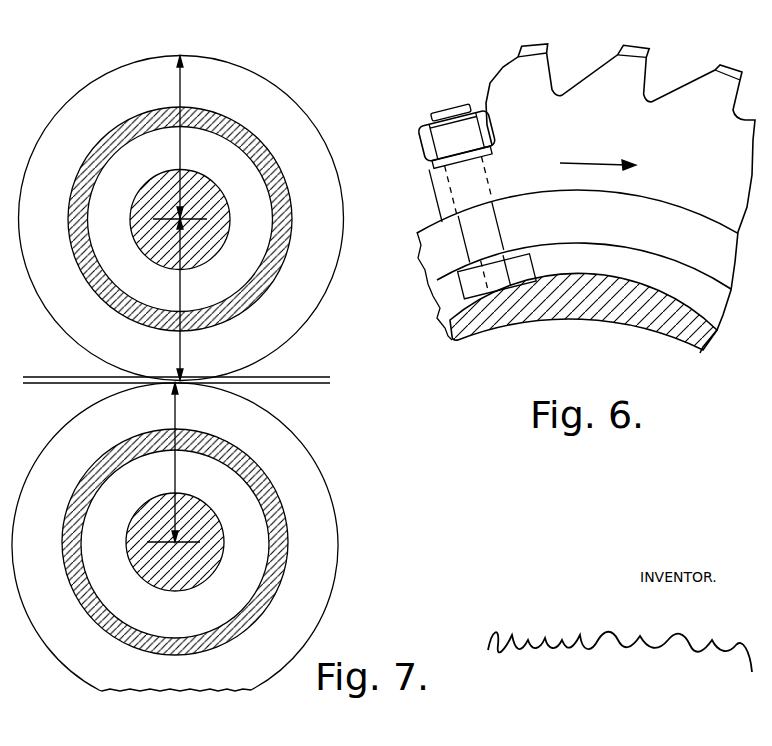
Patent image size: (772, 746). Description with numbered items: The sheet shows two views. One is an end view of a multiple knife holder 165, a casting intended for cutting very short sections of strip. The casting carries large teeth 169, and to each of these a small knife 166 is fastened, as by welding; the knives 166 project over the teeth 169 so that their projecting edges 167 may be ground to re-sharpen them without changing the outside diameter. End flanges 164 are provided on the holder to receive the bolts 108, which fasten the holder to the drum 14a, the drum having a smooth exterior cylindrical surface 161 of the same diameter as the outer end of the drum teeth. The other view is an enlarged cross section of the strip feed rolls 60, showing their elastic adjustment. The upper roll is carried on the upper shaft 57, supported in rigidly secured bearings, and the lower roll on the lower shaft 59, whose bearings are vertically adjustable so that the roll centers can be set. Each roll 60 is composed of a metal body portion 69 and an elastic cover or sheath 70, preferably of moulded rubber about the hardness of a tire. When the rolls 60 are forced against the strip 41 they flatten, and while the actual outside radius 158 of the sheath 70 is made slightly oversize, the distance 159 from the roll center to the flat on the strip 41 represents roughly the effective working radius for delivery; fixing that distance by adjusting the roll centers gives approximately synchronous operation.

In FIG. 7, the strip 41 is at (322, 367).
In FIG. 7, the upper shaft 57 is at (226, 197).
In FIG. 7, the lower shaft 59 is at (218, 568).
In FIG. 7, the strip feed rolls 60 is at (333, 265).
In FIG. 7, the body portion 69 is at (230, 126).
In FIG. 7, the elastic cover or sheath 70 is at (178, 374).
In FIG. 7, the outside radius 158 is at (178, 86).
In FIG. 7, the distance from roll center to the flat 159 is at (173, 352).
In FIG. 6, the bolts 108 is at (448, 110).
In FIG. 6, the drum 14a is at (627, 328).
In FIG. 6, the smooth exterior cylindrical surface 161 is at (685, 207).
In FIG. 6, the end flanges 164 is at (432, 203).
In FIG. 6, the multiple knife holder 165 is at (586, 198).
In FIG. 6, the small knives 166 is at (543, 43).
In FIG. 6, the projecting edges 167 is at (650, 53).
In FIG. 6, the large teeth 169 is at (615, 67).